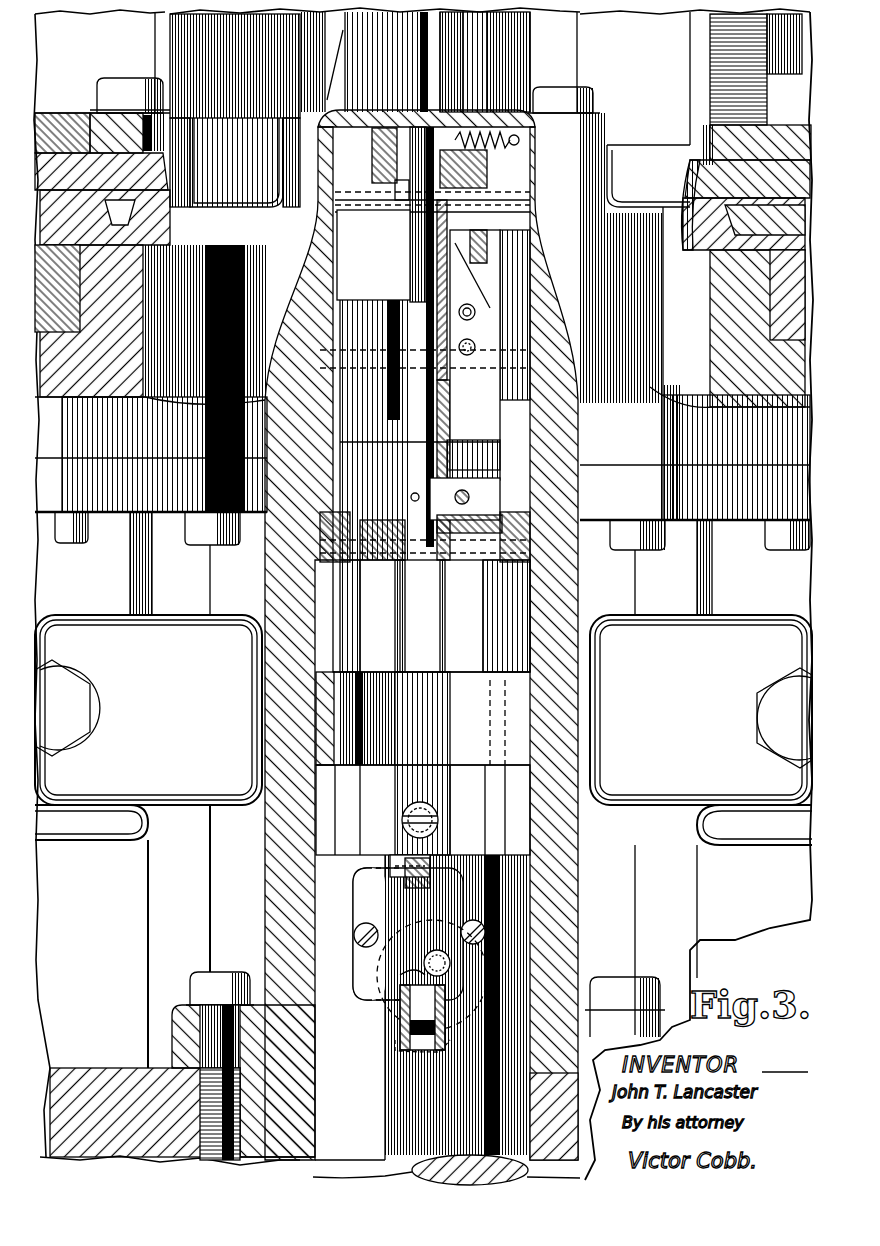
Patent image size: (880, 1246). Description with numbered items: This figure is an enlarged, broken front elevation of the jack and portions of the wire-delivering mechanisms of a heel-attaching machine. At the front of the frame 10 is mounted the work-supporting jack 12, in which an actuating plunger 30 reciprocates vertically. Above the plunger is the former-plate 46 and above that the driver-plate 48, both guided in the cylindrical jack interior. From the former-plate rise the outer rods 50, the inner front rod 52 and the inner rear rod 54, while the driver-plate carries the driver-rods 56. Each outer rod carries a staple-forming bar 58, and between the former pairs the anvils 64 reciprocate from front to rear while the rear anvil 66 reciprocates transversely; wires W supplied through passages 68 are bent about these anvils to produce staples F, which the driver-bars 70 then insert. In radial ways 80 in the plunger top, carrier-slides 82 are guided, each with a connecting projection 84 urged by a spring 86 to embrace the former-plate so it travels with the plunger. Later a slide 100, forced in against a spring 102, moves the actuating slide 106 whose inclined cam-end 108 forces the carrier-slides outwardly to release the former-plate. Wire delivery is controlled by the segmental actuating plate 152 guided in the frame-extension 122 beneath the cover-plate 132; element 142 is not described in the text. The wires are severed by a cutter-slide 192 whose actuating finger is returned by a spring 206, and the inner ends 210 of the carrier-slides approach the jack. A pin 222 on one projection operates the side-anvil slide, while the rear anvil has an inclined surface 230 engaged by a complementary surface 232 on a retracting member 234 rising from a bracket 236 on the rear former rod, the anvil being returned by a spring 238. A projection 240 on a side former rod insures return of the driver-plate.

The frame 10 is at (780, 912).
The work-supporting jack 12 is at (578, 860).
The actuating plunger 30 is at (522, 950).
The former-plate 46 is at (318, 740).
The driver-plate 48 is at (320, 570).
The outer rod 50 is at (450, 447).
The inner front rod 52 is at (440, 641).
The inner rear rod 54 is at (413, 567).
The driver-rod 56 is at (377, 575).
The staple-forming bar 58 is at (415, 240).
The anvil 64 is at (372, 138).
The rear anvil 66 is at (487, 165).
The slot or passage 68 is at (412, 201).
The driver-bar 70 is at (382, 284).
The radial way 80 is at (402, 860).
The carrier-slide 82 is at (445, 872).
The connecting projection 84 is at (488, 778).
The spring 86 is at (402, 930).
The slide 100 is at (382, 962).
The spring 102 is at (430, 977).
The actuating slide 106 is at (405, 1028).
The inclined cam-end 108 is at (372, 900).
The frame-extension 122 is at (760, 462).
The cover-plate 132 is at (781, 133).
The threaded column 142 is at (712, 88).
The segmental actuating plate 152 is at (782, 304).
The cutter-slide 192 is at (80, 205).
The spring 206 is at (130, 103).
The inner end of carrier-slide 210 is at (183, 172).
The pin 222 is at (407, 836).
The inclined surface 230 is at (455, 157).
The inclined surface 232 is at (482, 243).
The retracting member 234 is at (490, 352).
The bracket 236 is at (490, 495).
The spring 238 is at (562, 104).
The projection 240 is at (384, 616).
The wire W is at (102, 192).
The staple F is at (465, 57).